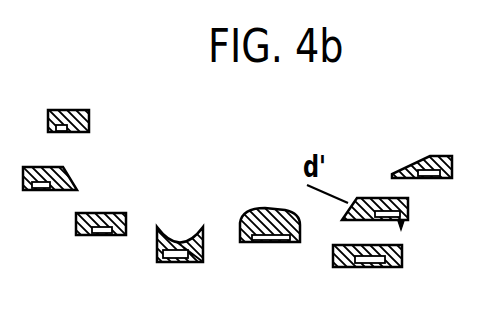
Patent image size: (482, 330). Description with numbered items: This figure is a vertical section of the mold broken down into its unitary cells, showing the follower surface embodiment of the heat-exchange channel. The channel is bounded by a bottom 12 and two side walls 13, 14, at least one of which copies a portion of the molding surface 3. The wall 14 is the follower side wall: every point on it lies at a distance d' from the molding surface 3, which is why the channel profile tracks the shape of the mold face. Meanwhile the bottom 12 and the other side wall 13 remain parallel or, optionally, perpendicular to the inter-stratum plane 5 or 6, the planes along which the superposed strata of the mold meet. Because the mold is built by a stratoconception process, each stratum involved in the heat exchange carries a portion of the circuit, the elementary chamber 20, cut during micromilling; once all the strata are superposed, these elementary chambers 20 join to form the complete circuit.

The molding surface 3 is at (350, 197).
The inter-stratum plane 5 is at (400, 222).
The inter-stratum plane 6 is at (382, 244).
The bottom 12 is at (67, 110).
The side wall 13 is at (58, 132).
The follower side wall 14 is at (62, 133).
The elementary chamber 20 is at (102, 234).